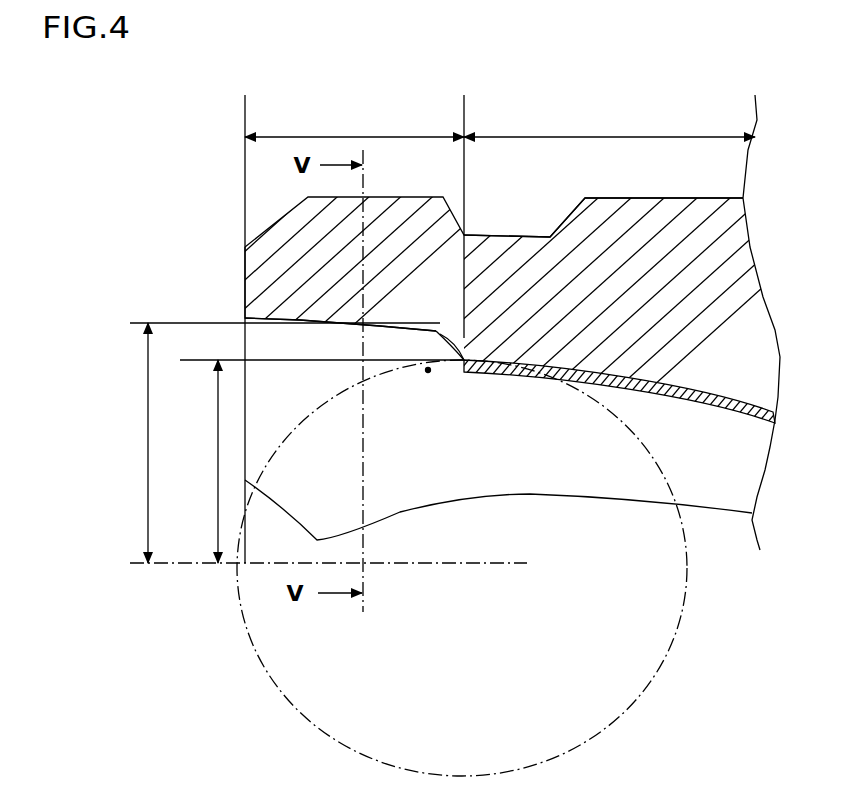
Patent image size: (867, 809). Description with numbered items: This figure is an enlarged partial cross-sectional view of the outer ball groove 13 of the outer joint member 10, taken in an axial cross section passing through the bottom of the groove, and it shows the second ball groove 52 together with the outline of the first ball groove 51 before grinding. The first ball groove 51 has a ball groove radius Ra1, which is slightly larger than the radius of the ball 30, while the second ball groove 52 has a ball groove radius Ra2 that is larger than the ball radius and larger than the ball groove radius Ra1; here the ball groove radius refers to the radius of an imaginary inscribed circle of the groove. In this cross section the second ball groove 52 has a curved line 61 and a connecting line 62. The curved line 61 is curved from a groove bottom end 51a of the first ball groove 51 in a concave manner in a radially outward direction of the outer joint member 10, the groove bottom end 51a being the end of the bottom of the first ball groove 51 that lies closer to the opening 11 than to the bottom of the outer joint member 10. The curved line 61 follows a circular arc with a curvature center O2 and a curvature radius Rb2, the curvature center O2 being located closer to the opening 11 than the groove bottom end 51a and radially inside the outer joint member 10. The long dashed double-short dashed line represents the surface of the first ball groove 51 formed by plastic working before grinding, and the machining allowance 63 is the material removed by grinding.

The outer joint member 10 is at (208, 210).
The opening 11 is at (245, 285).
The outer ball groove 13 is at (720, 483).
The ball 30 is at (685, 625).
The first ball groove 51 is at (636, 137).
The groove bottom end 51a is at (464, 363).
The second ball groove 52 is at (350, 137).
The curved line 61 is at (466, 357).
The connecting line 62 is at (300, 322).
The machining allowance 63 is at (670, 398).
The ball groove radius of the second ball groove Ra2 is at (120, 443).
The ball groove radius of the first ball groove Ra1 is at (315, 461).
The curvature center O2 is at (428, 374).
The curvature radius Rb2 is at (445, 352).